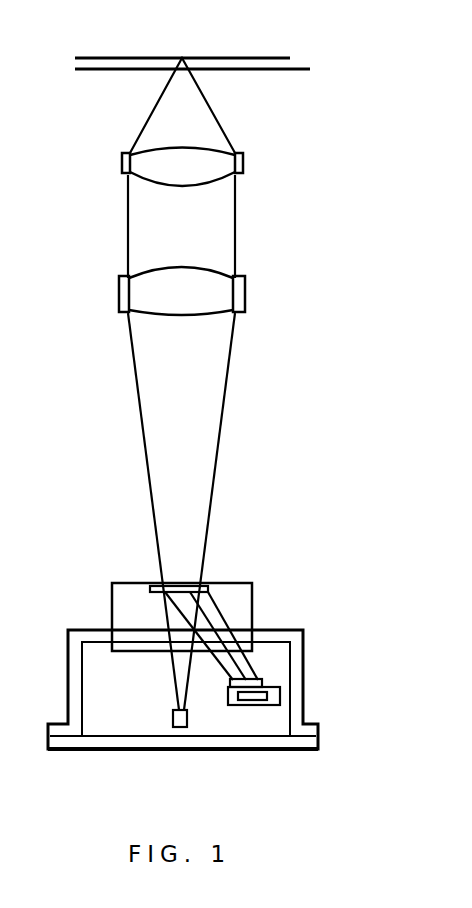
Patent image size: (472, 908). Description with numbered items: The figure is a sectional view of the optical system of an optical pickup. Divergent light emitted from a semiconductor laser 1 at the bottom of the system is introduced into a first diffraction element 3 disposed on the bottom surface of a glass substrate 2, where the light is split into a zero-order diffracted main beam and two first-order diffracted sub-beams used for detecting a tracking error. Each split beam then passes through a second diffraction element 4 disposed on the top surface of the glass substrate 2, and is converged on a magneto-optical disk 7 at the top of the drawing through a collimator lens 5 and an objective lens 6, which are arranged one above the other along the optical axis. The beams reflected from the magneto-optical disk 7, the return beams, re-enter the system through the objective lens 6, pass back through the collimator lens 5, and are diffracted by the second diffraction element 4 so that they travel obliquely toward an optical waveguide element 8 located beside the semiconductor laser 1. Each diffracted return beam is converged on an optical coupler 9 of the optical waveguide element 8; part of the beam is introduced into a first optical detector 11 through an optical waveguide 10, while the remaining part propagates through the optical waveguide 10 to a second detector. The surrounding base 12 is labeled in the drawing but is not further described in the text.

The semiconductor laser 1 is at (172, 720).
The glass substrate 2 is at (252, 604).
The first diffraction element 3 is at (150, 622).
The second diffraction element 4 is at (162, 585).
The collimator lens 5 is at (246, 293).
The objective lens 6 is at (243, 165).
The magneto-optical disk 7 is at (270, 60).
The optical waveguide element 8 is at (280, 695).
The optical coupler 9 is at (256, 679).
The optical waveguide 10 is at (278, 692).
The first optical detector 11 is at (255, 706).
The base housing 12 is at (320, 745).